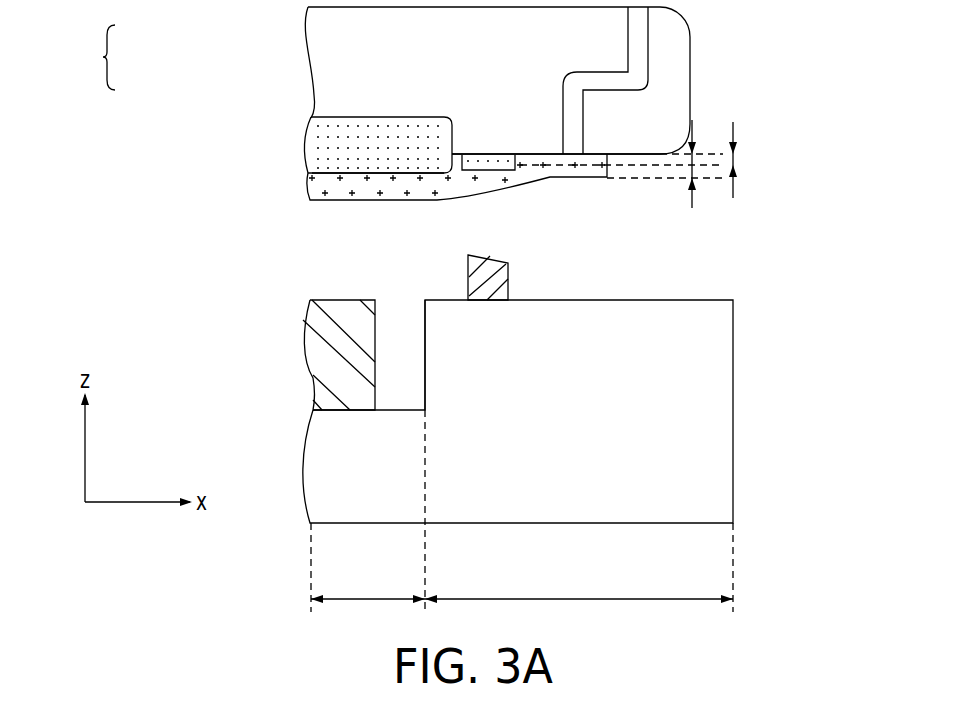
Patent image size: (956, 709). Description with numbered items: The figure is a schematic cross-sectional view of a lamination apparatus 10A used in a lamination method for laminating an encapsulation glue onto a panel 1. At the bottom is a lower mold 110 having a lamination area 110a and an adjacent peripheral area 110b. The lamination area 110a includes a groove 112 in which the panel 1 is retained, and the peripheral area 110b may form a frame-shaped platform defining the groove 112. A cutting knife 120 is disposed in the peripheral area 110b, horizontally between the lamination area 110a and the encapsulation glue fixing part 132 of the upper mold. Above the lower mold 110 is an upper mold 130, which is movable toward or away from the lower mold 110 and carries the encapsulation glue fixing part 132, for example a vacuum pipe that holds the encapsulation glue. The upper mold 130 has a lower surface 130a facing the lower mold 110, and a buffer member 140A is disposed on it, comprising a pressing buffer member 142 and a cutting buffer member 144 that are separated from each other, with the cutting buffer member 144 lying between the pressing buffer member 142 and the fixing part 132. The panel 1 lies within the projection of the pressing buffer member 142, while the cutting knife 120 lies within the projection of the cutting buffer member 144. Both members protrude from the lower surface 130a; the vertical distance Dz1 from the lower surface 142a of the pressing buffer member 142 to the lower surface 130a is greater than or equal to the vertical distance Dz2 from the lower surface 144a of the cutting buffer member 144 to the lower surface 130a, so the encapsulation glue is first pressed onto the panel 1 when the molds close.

The lamination apparatus 10A is at (813, 552).
The lower mold 110 is at (326, 470).
The lamination area 110a is at (368, 521).
The peripheral area 110b is at (579, 578).
The groove 112 is at (415, 347).
The panel 1 is at (343, 360).
The cutting knife 120 is at (490, 285).
The upper mold 130 is at (322, 48).
The lower surface of upper mold 130a is at (533, 164).
The encapsulation glue fixing part 132 is at (575, 162).
The buffer member 140A is at (107, 58).
The pressing buffer member 142 is at (322, 140).
The lower surface of pressing buffer member 142a is at (329, 179).
The cutting buffer member 144 is at (519, 166).
The lower surface of cutting buffer member 144a is at (465, 174).
The vertical distance Dz1 is at (685, 170).
The vertical distance Dz2 is at (737, 160).